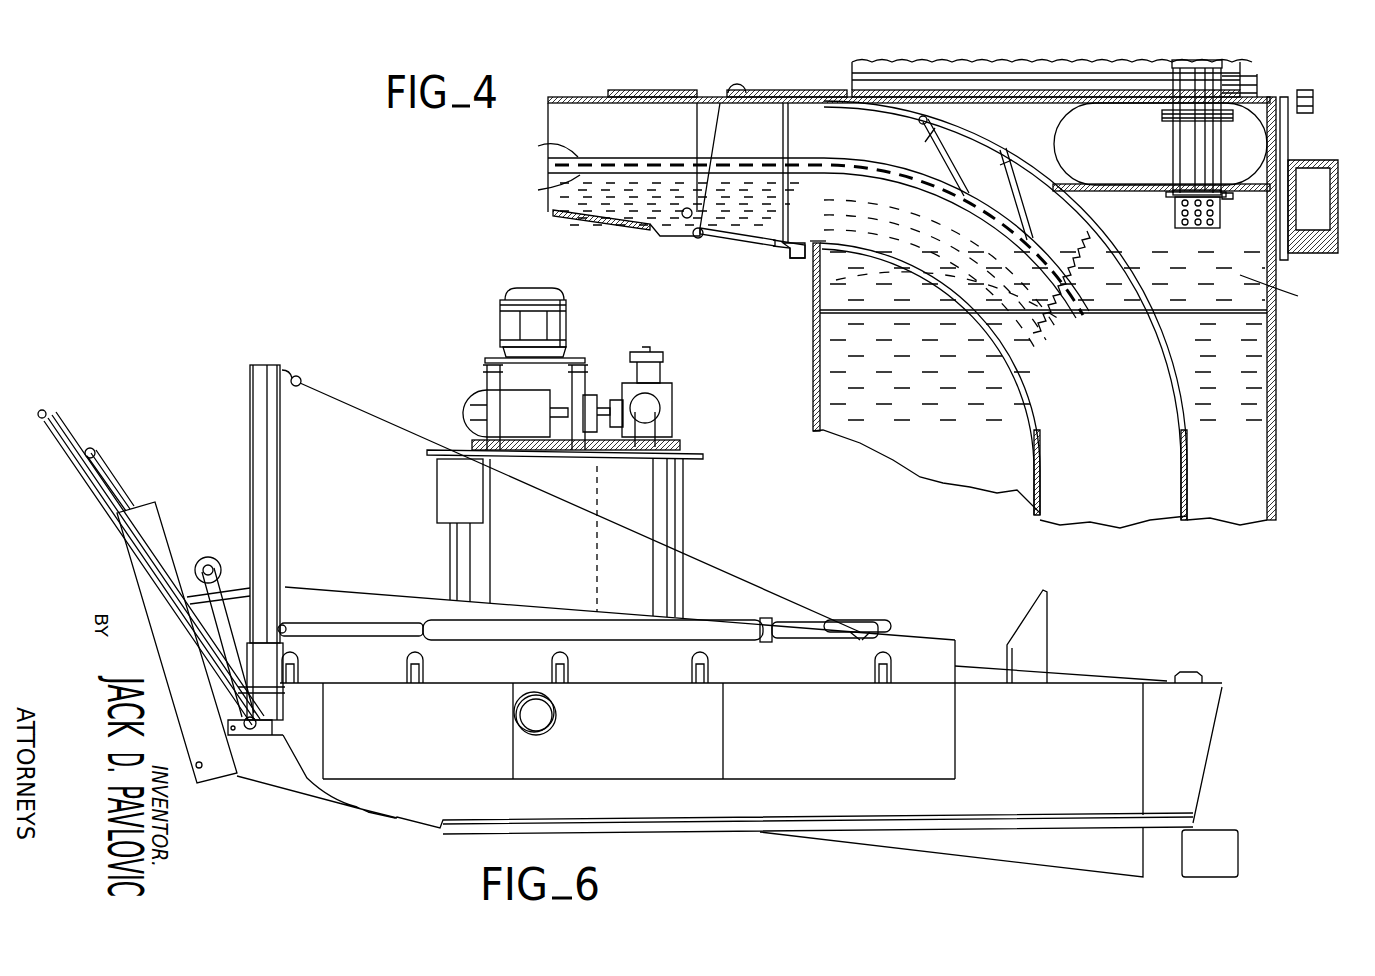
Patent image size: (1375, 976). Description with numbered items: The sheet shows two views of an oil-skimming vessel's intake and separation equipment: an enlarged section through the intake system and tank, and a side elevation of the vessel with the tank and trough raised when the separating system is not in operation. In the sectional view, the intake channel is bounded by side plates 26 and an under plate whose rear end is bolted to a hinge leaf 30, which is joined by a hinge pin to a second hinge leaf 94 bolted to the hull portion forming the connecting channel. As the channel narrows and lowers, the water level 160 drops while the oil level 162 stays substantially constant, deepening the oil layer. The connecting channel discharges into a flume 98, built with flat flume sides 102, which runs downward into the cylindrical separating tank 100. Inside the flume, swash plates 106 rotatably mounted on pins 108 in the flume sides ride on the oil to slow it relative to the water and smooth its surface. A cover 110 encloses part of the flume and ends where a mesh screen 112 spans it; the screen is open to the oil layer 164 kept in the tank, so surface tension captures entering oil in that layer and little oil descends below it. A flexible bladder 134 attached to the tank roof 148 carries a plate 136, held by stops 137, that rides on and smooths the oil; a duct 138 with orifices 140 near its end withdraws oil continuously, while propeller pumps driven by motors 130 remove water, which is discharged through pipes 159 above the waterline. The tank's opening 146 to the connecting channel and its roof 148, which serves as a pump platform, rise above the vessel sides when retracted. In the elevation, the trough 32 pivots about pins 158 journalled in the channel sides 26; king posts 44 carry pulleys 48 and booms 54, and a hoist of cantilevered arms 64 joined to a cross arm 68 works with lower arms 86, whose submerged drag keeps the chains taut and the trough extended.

In FIG. 4, the side plates 26 is at (638, 144).
In FIG. 6, the side plates 26 is at (284, 772).
In FIG. 4, the hinge leaf 30 is at (690, 238).
In FIG. 6, the trough 32 is at (160, 522).
In FIG. 6, the king posts 44 is at (250, 415).
In FIG. 6, the pulleys 48 is at (300, 380).
In FIG. 6, the booms 54 is at (543, 628).
In FIG. 6, the cantilevered arms 64 is at (110, 478).
In FIG. 6, the cross arm 68 is at (96, 451).
In FIG. 6, the lower arms 86 is at (62, 432).
In FIG. 4, the hinge leaf 94 is at (738, 242).
In FIG. 4, the flume 98 is at (993, 333).
In FIG. 4, the separating tank 100 is at (1278, 488).
In FIG. 6, the separating tank 100 is at (683, 518).
In FIG. 4, the flume sides 102 is at (858, 144).
In FIG. 4, the swash plates 106 is at (950, 150).
In FIG. 4, the pins 108 is at (952, 157).
In FIG. 4, the cover 110 is at (1003, 150).
In FIG. 4, the mesh screen 112 is at (1040, 335).
In FIG. 6, the motors 130 is at (500, 335).
In FIG. 4, the flexible bladder 134 is at (1247, 117).
In FIG. 4, the plate 136 is at (1140, 185).
In FIG. 4, the stops 137 is at (1228, 199).
In FIG. 4, the duct 138 is at (1183, 147).
In FIG. 4, the orifices 140 is at (1175, 212).
In FIG. 6, the opening 146 is at (437, 478).
In FIG. 6, the roof 148 is at (425, 452).
In FIG. 6, the pins 158 is at (200, 768).
In FIG. 6, the pipes 159 is at (556, 715).
In FIG. 4, the water level 160 is at (536, 190).
In FIG. 4, the oil level 162 is at (537, 148).
In FIG. 4, the oil layer 164 is at (1289, 292).